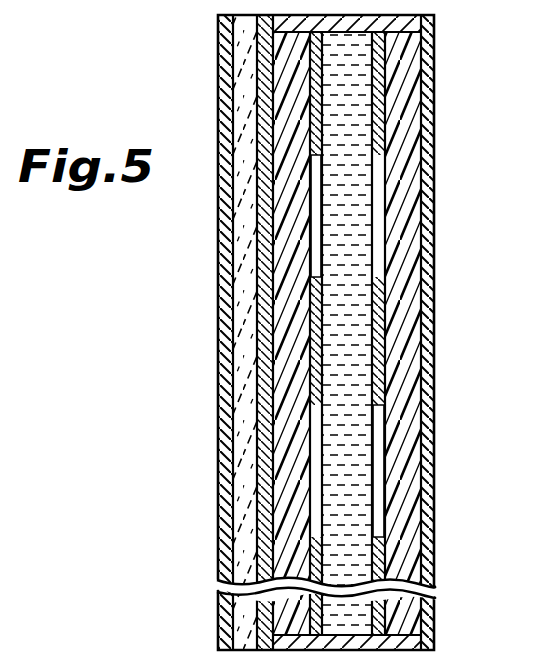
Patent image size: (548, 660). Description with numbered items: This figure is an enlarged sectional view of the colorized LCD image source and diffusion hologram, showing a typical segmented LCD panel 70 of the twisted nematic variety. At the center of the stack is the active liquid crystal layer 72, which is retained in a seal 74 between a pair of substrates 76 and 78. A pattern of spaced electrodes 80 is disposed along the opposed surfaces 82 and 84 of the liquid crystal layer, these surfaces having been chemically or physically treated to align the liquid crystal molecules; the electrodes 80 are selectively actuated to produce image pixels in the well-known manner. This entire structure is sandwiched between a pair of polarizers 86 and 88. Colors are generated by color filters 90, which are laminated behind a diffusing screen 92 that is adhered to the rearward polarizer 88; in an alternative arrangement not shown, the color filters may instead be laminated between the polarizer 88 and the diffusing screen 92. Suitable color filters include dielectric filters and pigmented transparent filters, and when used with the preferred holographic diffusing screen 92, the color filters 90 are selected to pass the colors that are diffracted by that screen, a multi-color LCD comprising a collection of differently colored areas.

The segmented LCD panel 70 is at (214, 352).
The active liquid crystal layer 72 is at (347, 60).
The seal 74 is at (343, 635).
The substrate 76 is at (287, 62).
The substrate 78 is at (407, 125).
The spaced electrodes 80 is at (380, 338).
The surface of the layer 82 is at (376, 460).
The surface of the layer 84 is at (325, 224).
The polarizer 86 is at (433, 492).
The rearward polarizer 88 is at (263, 218).
The color filters 90 is at (218, 293).
The diffusing screen 92 is at (236, 546).